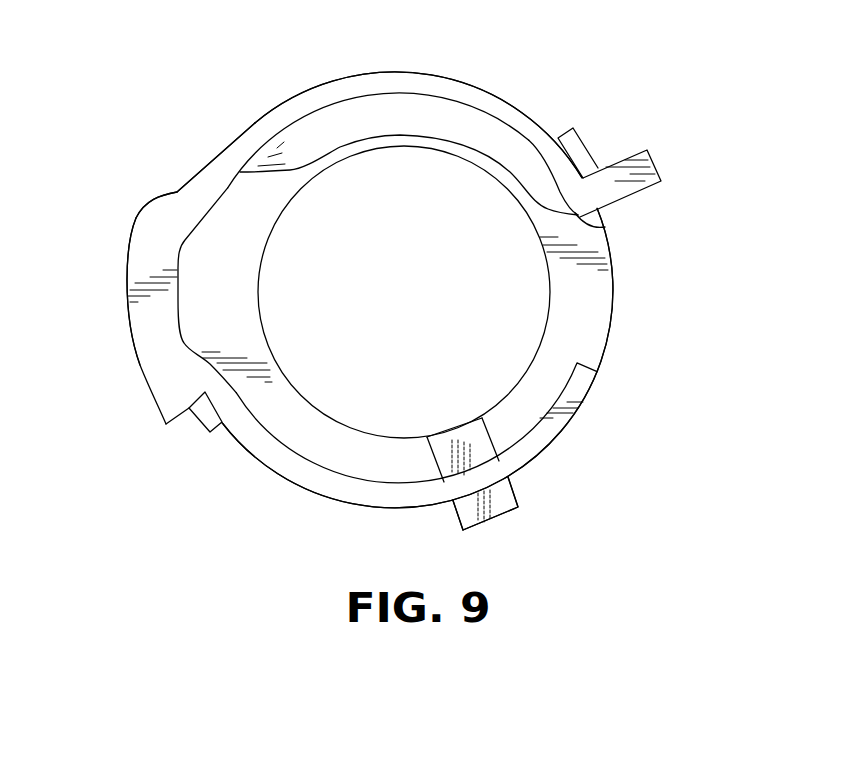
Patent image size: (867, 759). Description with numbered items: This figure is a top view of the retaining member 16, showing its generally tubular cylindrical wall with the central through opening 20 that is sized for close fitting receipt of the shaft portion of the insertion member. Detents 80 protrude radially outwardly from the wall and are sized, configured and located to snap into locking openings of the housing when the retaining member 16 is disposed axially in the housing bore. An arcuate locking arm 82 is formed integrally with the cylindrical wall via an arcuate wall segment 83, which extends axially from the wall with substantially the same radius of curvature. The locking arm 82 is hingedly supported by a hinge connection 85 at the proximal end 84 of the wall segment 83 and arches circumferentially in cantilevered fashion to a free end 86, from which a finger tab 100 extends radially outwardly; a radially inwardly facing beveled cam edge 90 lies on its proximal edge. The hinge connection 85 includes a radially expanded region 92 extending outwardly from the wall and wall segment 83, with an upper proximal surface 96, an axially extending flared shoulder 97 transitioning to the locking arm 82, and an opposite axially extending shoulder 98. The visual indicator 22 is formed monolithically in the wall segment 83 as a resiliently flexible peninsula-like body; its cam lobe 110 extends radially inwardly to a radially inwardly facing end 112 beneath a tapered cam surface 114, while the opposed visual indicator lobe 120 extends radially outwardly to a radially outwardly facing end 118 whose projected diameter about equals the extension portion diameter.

The retaining member 16 is at (551, 87).
The through opening 20 is at (415, 295).
The visual indicator 22 is at (505, 500).
The detent 80 is at (200, 429).
The locking arm 82 is at (463, 74).
The wall segment 83 is at (267, 466).
The proximal end 84 is at (341, 493).
The hinge connection 85 is at (184, 214).
The free end 86 is at (605, 227).
The beveled cam edge 90 is at (367, 120).
The radially expanded region 92 is at (128, 291).
The upper proximal surface 96 is at (148, 250).
The flared shoulder 97 is at (185, 190).
The shoulder 98 is at (166, 426).
The finger tab 100 is at (655, 160).
The cam lobe 110 is at (433, 466).
The radially inwardly facing end 112 is at (458, 430).
The tapered cam surface 114 is at (443, 437).
The radially outwardly facing end 118 is at (490, 525).
The visual indicator lobe 120 is at (454, 514).